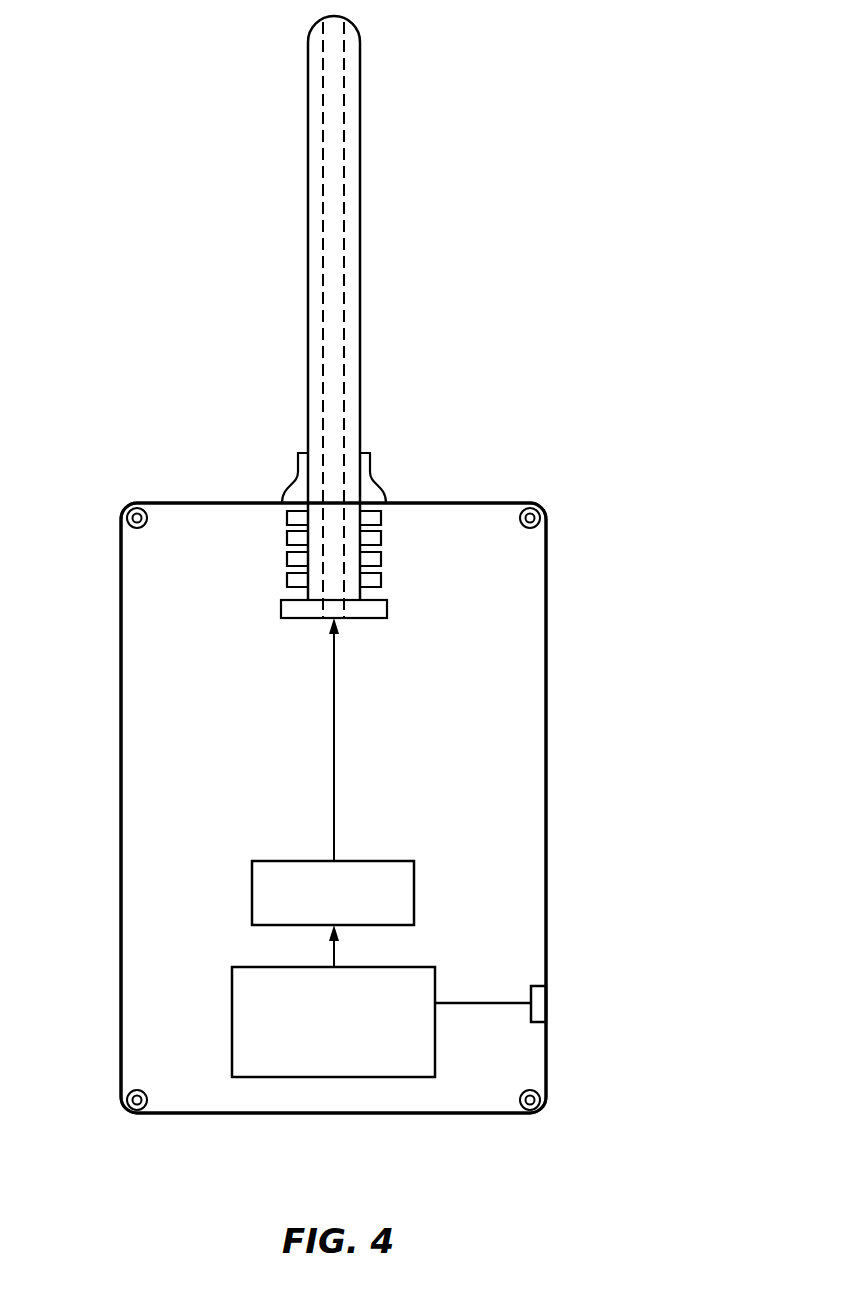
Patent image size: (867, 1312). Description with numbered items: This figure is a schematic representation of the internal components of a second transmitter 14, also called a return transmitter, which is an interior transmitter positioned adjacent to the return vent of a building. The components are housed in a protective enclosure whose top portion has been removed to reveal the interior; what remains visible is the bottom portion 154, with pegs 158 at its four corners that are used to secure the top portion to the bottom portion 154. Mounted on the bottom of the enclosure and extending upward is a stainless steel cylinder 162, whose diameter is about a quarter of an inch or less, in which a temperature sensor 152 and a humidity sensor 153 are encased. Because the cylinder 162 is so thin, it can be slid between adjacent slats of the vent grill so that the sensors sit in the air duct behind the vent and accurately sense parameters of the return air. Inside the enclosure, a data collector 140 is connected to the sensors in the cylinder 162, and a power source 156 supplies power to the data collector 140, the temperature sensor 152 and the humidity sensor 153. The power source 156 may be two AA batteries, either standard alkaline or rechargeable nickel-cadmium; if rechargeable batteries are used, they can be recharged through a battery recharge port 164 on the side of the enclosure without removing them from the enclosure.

The second transmitter 14 is at (503, 503).
The data collector 140 is at (348, 866).
The temperature sensor 152 is at (345, 76).
The humidity sensor 153 is at (323, 121).
The bottom portion 154 is at (498, 913).
The power source 156 is at (333, 1022).
The pegs 158 is at (126, 520).
The stainless steel cylinder 162 is at (360, 257).
The battery recharge port 164 is at (537, 986).